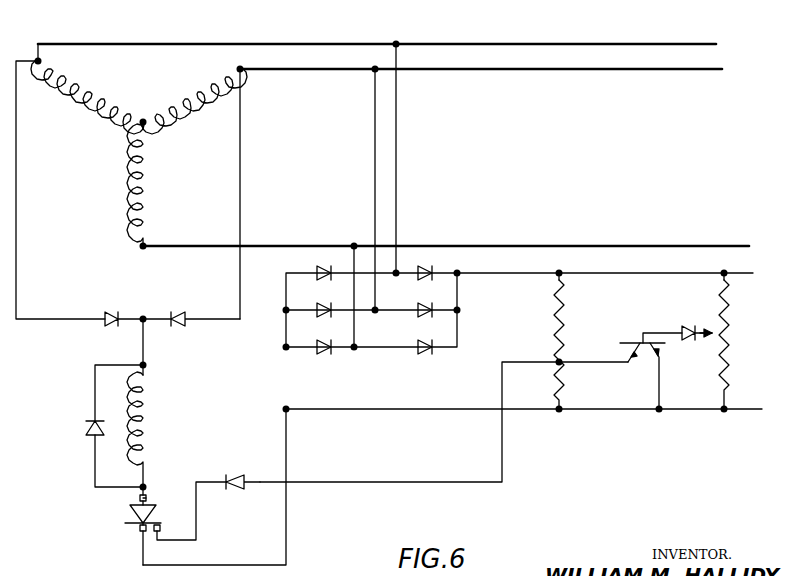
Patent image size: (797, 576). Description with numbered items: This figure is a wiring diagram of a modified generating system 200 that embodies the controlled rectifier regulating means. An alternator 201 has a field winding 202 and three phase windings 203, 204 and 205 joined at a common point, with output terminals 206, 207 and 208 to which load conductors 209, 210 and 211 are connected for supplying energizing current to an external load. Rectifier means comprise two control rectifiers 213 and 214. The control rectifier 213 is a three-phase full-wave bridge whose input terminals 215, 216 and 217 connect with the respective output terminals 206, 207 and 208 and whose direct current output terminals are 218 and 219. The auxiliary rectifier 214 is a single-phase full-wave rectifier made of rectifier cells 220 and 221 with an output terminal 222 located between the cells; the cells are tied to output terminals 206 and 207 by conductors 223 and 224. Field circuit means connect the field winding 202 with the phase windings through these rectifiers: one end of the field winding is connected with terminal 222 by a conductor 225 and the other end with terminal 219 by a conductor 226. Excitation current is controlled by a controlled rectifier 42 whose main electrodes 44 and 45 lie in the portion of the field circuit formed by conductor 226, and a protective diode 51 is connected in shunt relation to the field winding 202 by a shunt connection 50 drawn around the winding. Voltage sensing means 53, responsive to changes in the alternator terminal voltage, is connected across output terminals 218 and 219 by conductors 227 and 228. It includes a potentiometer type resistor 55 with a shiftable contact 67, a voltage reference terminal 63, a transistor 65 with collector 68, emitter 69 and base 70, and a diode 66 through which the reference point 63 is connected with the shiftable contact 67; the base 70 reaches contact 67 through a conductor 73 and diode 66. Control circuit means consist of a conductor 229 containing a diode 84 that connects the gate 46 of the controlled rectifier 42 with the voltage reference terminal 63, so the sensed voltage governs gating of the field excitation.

The generating system 200 is at (592, 35).
The load conductor 209 is at (549, 46).
The load conductor 210 is at (559, 71).
The load conductor 211 is at (551, 246).
The output terminal 206 is at (38, 61).
The alternator 201 is at (139, 153).
The phase winding 203 is at (80, 104).
The phase winding 204 is at (206, 102).
The phase winding 205 is at (162, 192).
The output terminal 207 is at (243, 71).
The output terminal 208 is at (140, 247).
The conductor 223 is at (16, 210).
The conductor 224 is at (240, 172).
The control rectifier 214 is at (139, 318).
The rectifier cell 220 is at (110, 326).
The rectifier cell 221 is at (178, 326).
The output terminal 222 is at (143, 319).
The conductor 225 is at (146, 345).
The conductor loop 50 is at (98, 450).
The protective diode 51 is at (85, 426).
The field winding 202 is at (147, 414).
The controlled rectifier 42 is at (128, 515).
The main electrode 44 is at (147, 498).
The main electrode 45 is at (139, 530).
The gate 46 is at (160, 528).
The diode 84 is at (238, 478).
The conductor 226 is at (287, 508).
The direct current output terminal 219 is at (286, 409).
The conductor 228 is at (428, 409).
The conductor 229 is at (388, 484).
The control rectifier 213 is at (408, 335).
The input terminal 215 is at (399, 273).
The input terminal 216 is at (377, 310).
The input terminal 217 is at (356, 348).
The direct current output terminal 218 is at (458, 273).
The conductor 227 is at (521, 280).
The voltage reference terminal 63 is at (561, 364).
The potentiometer type resistor 55 is at (730, 333).
The voltage sensing means 53 is at (640, 357).
The base 70 is at (640, 338).
The transistor 65 is at (632, 357).
The collector 68 is at (620, 362).
The emitter 69 is at (662, 358).
The conductor 73 is at (661, 333).
The diode 66 is at (696, 321).
The shiftable contact 67 is at (708, 340).